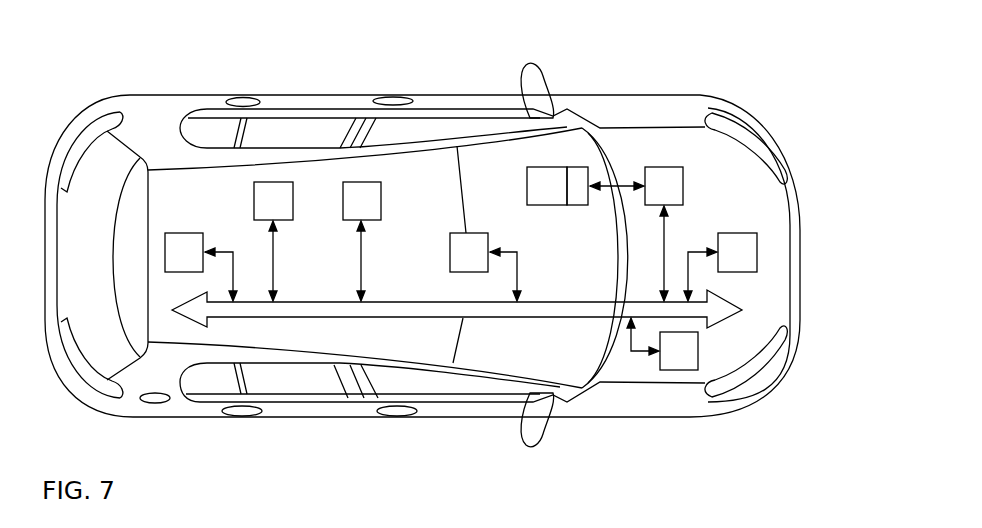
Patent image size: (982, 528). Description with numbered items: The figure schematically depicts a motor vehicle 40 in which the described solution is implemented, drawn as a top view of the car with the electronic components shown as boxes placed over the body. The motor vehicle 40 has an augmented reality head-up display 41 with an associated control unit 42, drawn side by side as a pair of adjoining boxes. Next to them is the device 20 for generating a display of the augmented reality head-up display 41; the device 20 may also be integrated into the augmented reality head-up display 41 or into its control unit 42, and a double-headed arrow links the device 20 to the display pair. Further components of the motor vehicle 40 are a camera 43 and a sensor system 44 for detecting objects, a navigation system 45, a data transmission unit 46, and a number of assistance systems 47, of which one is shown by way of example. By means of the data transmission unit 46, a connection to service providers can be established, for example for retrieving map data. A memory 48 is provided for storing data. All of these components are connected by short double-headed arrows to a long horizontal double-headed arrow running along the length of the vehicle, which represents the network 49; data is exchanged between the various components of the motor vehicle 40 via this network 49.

The motor vehicle 40 is at (673, 95).
The device for generating a display 20 is at (683, 187).
The augmented reality head-up display 41 is at (545, 167).
The control unit 42 is at (578, 167).
The camera 43 is at (462, 233).
The sensor system 44 is at (680, 370).
The navigation system 45 is at (260, 183).
The data transmission unit 46 is at (350, 183).
The assistance system 47 is at (738, 233).
The memory 48 is at (179, 233).
The network 49 is at (299, 315).